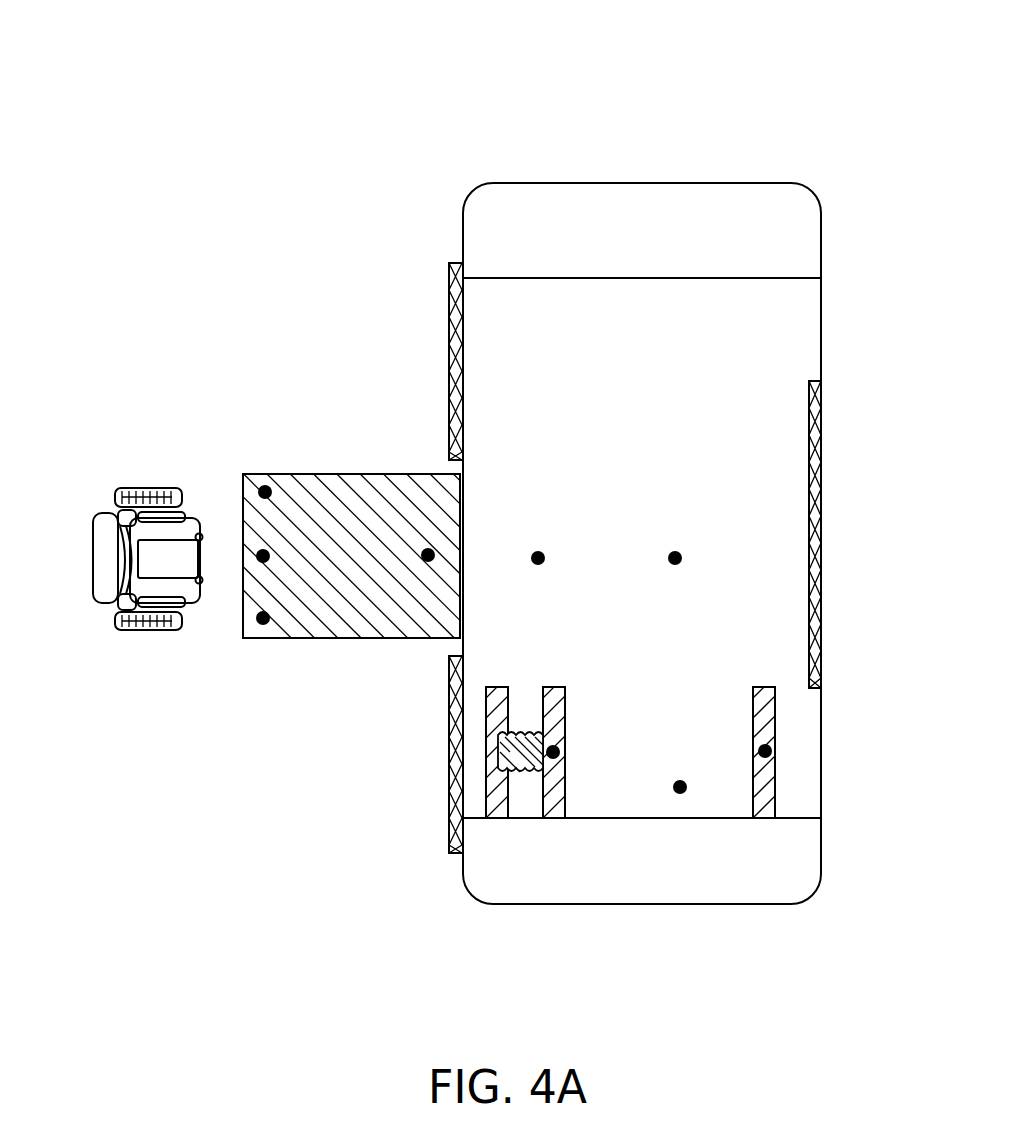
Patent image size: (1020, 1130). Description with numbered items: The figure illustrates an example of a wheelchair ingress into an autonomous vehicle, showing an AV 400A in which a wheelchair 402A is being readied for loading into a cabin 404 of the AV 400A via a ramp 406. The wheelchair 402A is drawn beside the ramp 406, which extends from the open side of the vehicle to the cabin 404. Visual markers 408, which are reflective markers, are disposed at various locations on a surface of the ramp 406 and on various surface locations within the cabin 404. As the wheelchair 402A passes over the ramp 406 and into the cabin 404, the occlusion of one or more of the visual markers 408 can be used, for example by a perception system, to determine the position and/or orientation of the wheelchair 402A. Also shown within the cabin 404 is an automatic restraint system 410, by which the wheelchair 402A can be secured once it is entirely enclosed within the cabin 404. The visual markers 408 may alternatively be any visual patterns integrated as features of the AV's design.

The AV 400A is at (388, 58).
The wheelchair 402A is at (150, 488).
The cabin 404 is at (463, 237).
The ramp 406 is at (243, 605).
The visual markers 408 is at (265, 492).
The automatic restraint system 410 is at (498, 762).